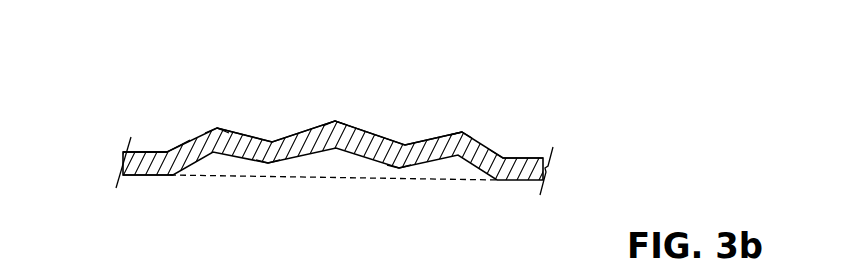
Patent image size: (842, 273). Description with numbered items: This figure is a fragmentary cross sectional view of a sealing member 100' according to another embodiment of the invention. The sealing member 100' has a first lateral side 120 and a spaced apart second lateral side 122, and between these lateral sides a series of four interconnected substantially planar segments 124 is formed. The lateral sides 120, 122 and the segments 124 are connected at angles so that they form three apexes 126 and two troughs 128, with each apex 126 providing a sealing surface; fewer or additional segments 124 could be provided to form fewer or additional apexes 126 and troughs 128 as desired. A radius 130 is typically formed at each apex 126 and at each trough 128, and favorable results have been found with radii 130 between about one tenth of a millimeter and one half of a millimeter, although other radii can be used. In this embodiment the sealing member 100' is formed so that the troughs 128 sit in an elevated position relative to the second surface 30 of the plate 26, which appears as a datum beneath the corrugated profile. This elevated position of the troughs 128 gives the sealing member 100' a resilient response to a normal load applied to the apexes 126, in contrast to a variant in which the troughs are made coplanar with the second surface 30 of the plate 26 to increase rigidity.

The sealing member 100' is at (405, 109).
The first lateral side 120 is at (191, 141).
The second lateral side 122 is at (490, 148).
The substantially planar segments 124 is at (245, 139).
The apexes 126 is at (215, 128).
The troughs 128 is at (268, 165).
The radius 130 is at (272, 130).
The plate 26 is at (140, 163).
The second surface 30 is at (143, 176).